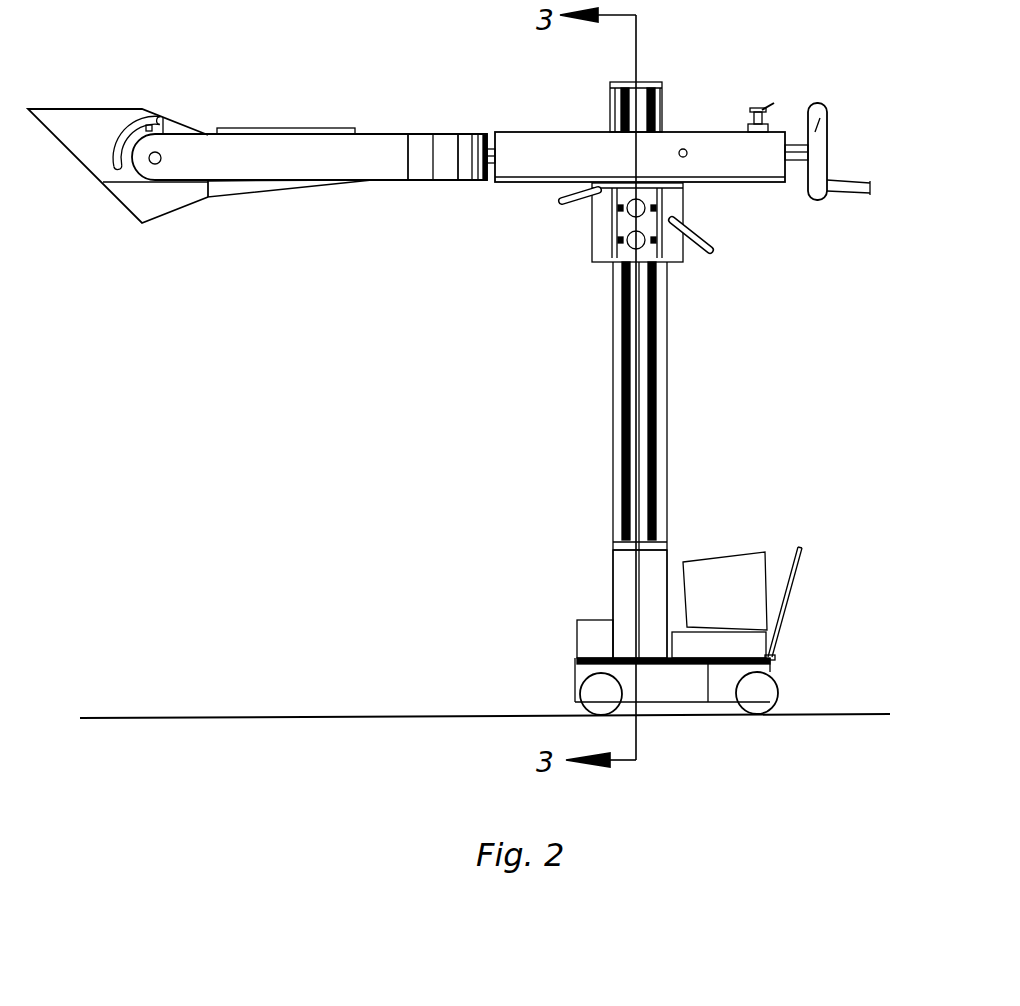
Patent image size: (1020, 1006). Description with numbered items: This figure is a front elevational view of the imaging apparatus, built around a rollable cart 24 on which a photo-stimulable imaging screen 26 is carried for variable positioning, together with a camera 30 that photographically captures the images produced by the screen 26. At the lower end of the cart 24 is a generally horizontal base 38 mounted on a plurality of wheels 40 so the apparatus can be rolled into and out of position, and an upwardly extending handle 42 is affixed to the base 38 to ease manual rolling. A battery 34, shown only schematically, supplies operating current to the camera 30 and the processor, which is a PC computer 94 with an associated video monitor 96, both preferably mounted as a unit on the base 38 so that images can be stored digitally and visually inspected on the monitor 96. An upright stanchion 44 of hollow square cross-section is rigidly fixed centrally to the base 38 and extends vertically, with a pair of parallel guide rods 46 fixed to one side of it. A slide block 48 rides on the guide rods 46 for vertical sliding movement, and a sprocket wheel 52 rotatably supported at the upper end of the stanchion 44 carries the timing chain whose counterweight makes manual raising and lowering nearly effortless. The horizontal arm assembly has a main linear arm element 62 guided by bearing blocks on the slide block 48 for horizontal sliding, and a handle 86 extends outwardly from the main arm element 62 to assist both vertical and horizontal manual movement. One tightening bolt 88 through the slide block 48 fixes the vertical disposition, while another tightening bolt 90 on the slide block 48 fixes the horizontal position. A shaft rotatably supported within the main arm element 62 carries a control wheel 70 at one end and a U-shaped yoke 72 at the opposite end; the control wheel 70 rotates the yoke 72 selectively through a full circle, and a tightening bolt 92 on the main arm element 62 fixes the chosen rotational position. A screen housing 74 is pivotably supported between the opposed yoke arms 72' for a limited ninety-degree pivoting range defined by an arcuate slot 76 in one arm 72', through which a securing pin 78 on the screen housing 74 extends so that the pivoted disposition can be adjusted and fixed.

The rollable cart 24 is at (500, 537).
The photo-stimulable imaging screen 26 is at (135, 108).
The camera 30 is at (300, 128).
The battery 34 is at (596, 640).
The base 38 is at (690, 692).
The wheels 40 is at (760, 698).
The handle 42 is at (792, 572).
The stanchion 44 is at (625, 578).
The guide rods 46 is at (626, 468).
The slide block 48 is at (682, 256).
The sprocket wheel 52 is at (610, 108).
The main arm element 62 is at (754, 166).
The control wheel 70 is at (828, 132).
The yoke 72 is at (313, 191).
The yoke arms 72' is at (442, 129).
The screen housing 74 is at (160, 214).
The arcuate slot 76 is at (105, 152).
The securing pin 78 is at (147, 128).
The handle 86 is at (686, 149).
The tightening bolt 88 is at (570, 206).
The tightening bolt 90 is at (714, 251).
The tightening bolt 92 is at (760, 107).
The PC computer 94 is at (772, 653).
The video monitor 96 is at (741, 612).